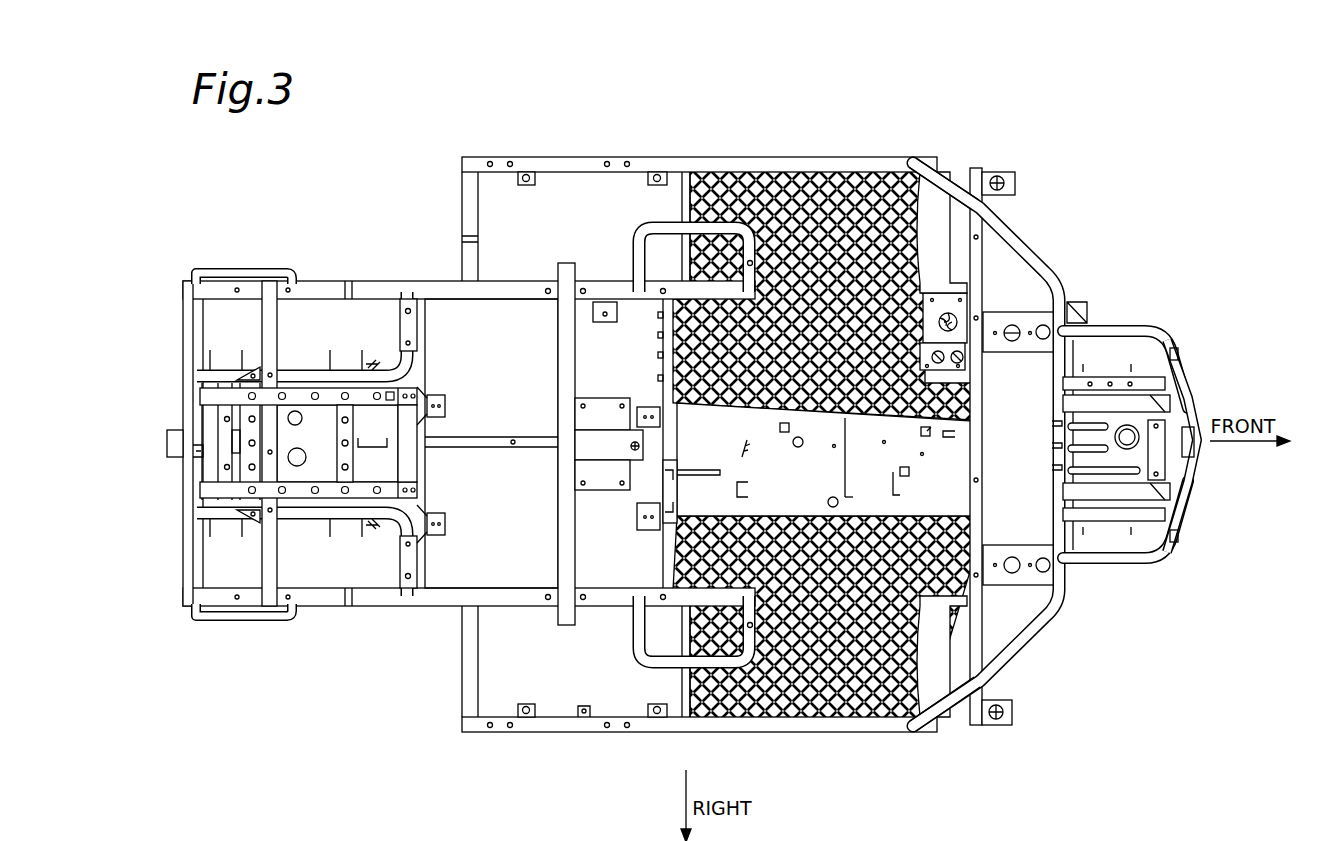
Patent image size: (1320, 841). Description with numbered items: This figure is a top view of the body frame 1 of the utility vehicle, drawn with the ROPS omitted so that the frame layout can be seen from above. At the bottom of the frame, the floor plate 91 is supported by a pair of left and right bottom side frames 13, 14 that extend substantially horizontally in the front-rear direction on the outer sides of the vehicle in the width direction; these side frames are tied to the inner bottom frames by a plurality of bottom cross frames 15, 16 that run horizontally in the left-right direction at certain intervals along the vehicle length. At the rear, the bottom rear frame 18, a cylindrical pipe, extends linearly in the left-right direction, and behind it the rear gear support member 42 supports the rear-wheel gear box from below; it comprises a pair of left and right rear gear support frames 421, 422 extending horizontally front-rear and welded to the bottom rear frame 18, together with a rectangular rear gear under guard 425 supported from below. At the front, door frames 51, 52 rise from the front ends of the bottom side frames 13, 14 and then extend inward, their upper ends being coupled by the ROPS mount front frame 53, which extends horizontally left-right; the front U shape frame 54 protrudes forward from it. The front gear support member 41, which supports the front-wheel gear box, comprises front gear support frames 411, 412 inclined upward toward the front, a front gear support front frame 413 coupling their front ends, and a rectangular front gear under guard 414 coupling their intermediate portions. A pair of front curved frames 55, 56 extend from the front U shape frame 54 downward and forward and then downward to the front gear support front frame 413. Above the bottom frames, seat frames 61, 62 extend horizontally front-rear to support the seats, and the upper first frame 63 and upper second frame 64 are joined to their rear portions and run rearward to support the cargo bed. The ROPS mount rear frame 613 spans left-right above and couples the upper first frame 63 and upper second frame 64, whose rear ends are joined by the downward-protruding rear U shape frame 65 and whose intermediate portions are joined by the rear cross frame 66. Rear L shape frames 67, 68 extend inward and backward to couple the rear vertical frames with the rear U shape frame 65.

The body frame 1 is at (1088, 188).
The bottom side frame 13 is at (610, 732).
The bottom side frame 14 is at (668, 160).
The bottom cross frame 15 is at (472, 682).
The bottom cross frame 16 is at (470, 187).
The bottom rear frame 18 is at (422, 580).
The front gear support member 41 is at (1188, 368).
The rear gear support member 42 is at (312, 352).
The door frame 51 is at (957, 712).
The door frame 52 is at (925, 176).
The ROPS mount front frame 53 is at (977, 178).
The front U shape frame 54 is at (1018, 247).
The front curved frame 55 is at (1155, 560).
The front curved frame 56 is at (1147, 330).
The seat frame 61 is at (645, 606).
The seat frame 62 is at (646, 236).
The upper first frame 63 is at (533, 606).
The upper second frame 64 is at (533, 281).
The rear U shape frame 65 is at (195, 352).
The rear cross frame 66 is at (268, 317).
The rear L shape frame 67 is at (288, 510).
The rear L shape frame 68 is at (292, 377).
The floor plate 91 is at (838, 690).
The front gear support frame 411 is at (1128, 487).
The front gear support frame 412 is at (1118, 410).
The front gear support front frame 413 is at (1192, 402).
The front gear under guard 414 is at (1107, 457).
The rear gear support frame 421 is at (340, 498).
The rear gear support frame 422 is at (353, 390).
The rear gear under guard 425 is at (315, 462).
The ROPS mount rear frame 613 is at (566, 263).